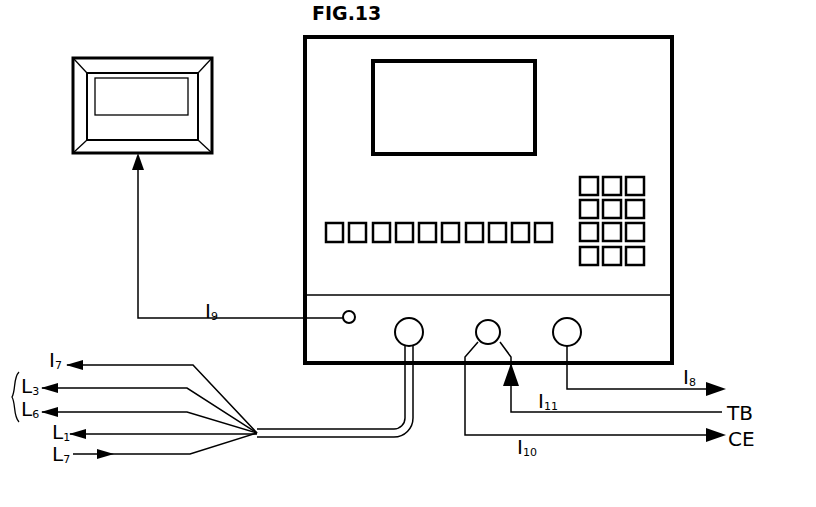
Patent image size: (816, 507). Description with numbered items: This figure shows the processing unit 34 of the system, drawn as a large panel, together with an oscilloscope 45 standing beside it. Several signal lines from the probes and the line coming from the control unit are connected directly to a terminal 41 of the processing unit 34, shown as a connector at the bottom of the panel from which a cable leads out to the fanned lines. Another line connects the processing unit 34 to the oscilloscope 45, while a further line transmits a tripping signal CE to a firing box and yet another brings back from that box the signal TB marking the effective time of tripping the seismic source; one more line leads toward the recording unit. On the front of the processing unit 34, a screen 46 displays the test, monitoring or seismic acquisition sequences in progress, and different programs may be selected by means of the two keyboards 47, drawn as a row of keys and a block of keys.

The processing unit 34 is at (681, 130).
The terminal 41 is at (394, 325).
The oscilloscope 45 is at (212, 128).
The screen 46 is at (373, 115).
The keyboards 47 is at (572, 205).